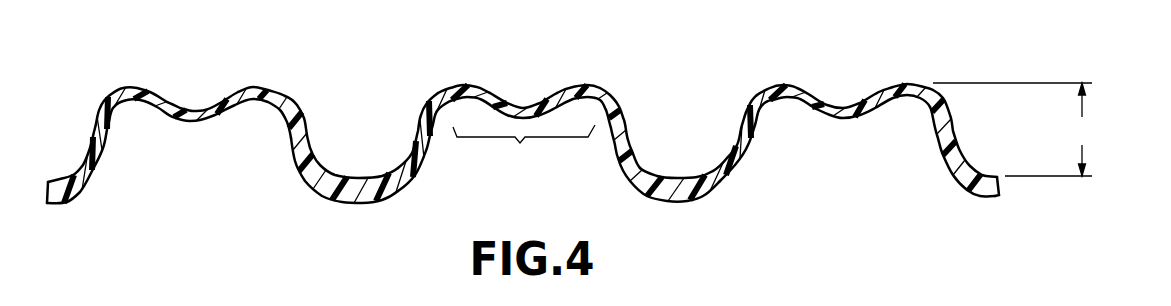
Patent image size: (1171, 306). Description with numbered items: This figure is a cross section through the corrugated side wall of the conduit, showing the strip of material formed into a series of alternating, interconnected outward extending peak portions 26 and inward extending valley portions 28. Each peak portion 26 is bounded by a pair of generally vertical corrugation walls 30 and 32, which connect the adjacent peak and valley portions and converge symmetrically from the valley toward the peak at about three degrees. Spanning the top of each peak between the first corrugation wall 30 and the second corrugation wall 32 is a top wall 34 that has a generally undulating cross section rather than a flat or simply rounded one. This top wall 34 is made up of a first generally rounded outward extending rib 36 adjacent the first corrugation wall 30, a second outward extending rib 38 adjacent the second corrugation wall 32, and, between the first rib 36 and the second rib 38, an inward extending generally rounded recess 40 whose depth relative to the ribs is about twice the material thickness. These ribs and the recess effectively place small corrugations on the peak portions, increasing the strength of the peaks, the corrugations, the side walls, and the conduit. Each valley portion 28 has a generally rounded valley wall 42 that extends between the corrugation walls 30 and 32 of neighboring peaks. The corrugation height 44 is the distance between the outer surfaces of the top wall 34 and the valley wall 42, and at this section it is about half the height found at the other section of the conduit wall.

The peak portion 26 is at (200, 100).
The valley portion 28 is at (360, 150).
The first corrugation wall 30 is at (417, 125).
The second corrugation wall 32 is at (630, 128).
The top wall 34 is at (524, 147).
The first rib 36 is at (465, 85).
The second rib 38 is at (597, 93).
The recess 40 is at (525, 108).
The valley wall 42 is at (680, 176).
The corrugation height 44 is at (1016, 129).